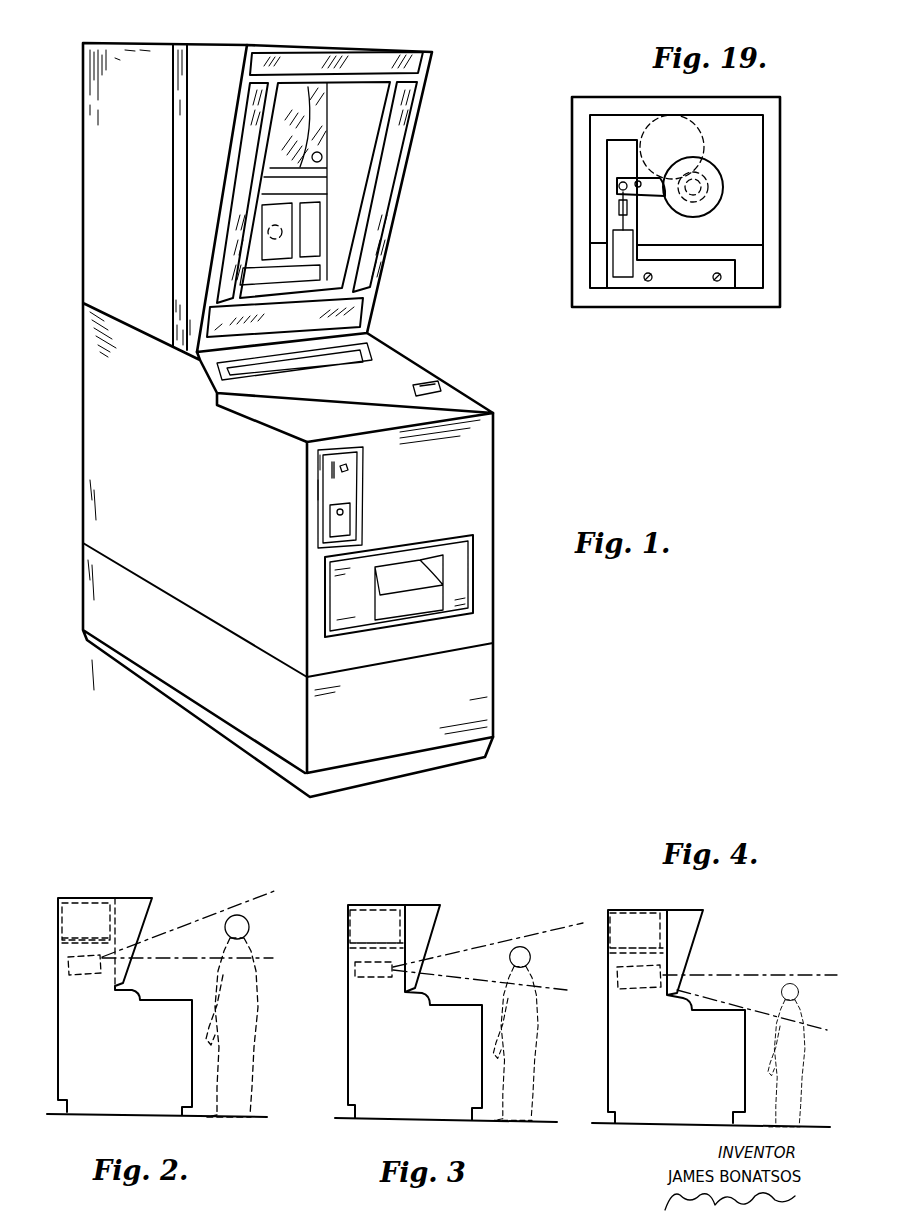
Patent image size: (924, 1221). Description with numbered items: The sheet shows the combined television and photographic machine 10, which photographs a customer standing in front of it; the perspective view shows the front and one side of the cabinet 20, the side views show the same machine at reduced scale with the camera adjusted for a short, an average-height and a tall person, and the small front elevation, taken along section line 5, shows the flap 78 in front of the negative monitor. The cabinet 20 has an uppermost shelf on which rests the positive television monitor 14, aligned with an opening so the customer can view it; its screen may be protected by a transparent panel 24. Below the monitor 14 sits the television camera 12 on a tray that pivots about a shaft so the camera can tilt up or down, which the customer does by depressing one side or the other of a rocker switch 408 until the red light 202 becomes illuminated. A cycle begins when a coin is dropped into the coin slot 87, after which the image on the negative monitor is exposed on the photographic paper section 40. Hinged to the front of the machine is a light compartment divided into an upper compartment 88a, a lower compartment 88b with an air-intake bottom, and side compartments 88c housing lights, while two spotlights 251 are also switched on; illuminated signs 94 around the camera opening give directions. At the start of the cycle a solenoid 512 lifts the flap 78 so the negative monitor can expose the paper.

In FIG. 1, the combined television and photographic machine 10 is at (110, 181).
In FIG. 2, the combined television and photographic machine 10 is at (62, 912).
In FIG. 3, the combined television and photographic machine 10 is at (355, 1070).
In FIG. 4, the combined television and photographic machine 10 is at (623, 1065).
In FIG. 1, the television camera 12 is at (287, 230).
In FIG. 2, the television camera 12 is at (102, 957).
In FIG. 3, the television camera 12 is at (365, 963).
In FIG. 4, the television camera 12 is at (632, 968).
In FIG. 1, the positive television monitor 14 is at (333, 117).
In FIG. 2, the positive television monitor 14 is at (88, 942).
In FIG. 3, the positive television monitor 14 is at (372, 918).
In FIG. 4, the positive television monitor 14 is at (627, 920).
In FIG. 1, the cabinet 20 is at (473, 492).
In FIG. 1, the transparent panel 24 is at (327, 142).
In FIG. 1, the photographic paper section 40 is at (423, 600).
In FIG. 1, the section line 5- 5 is at (402, 15).
In FIG. 19, the flap 78 is at (712, 200).
In FIG. 1, the coin slot 87 is at (328, 472).
In FIG. 1, the upper compartment 88a is at (407, 48).
In FIG. 1, the lower compartment 88b is at (323, 317).
In FIG. 1, the side compartments 88c is at (235, 217).
In FIG. 1, the illuminated signs 94 is at (230, 272).
In FIG. 1, the red light 202 is at (323, 160).
In FIG. 1, the spotlights 251 is at (370, 353).
In FIG. 1, the rocker switch 408 is at (427, 387).
In FIG. 19, the solenoid 512 is at (620, 252).